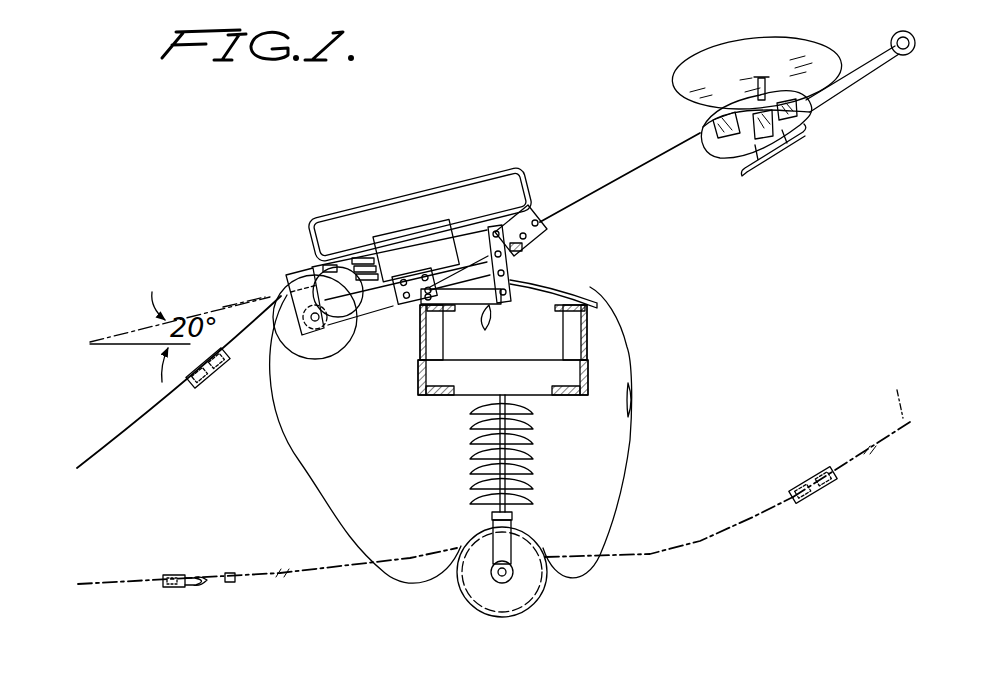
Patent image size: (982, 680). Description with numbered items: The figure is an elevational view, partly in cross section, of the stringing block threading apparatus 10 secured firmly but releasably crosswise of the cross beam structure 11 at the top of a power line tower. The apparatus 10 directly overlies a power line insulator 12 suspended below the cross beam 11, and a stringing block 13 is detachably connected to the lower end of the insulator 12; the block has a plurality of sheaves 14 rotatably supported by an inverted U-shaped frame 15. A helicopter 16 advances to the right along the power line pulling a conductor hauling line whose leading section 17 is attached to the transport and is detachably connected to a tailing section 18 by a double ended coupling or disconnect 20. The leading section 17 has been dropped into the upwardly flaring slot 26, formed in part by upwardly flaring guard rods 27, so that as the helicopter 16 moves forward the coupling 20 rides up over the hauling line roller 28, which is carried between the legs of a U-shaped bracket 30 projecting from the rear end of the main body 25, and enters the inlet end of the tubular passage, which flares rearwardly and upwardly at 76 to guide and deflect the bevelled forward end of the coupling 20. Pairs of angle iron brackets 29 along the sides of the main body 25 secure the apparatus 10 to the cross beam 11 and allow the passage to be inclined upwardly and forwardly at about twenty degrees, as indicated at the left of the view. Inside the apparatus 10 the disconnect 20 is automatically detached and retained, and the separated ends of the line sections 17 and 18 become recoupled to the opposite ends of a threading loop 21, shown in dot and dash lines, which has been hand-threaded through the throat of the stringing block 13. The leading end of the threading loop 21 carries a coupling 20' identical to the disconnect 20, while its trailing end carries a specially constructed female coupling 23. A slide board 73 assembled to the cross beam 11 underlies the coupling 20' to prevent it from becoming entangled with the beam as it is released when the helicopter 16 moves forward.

The stringing block threading apparatus 10 is at (482, 153).
The cross beam structure 11 is at (419, 401).
The power line insulator 12 is at (468, 463).
The stringing block 13 is at (488, 519).
The sheaves 14 is at (470, 600).
The inverted U-shaped frame 15 is at (505, 545).
The helicopter 16 is at (732, 168).
The leading section of hauling line 17 is at (637, 170).
The tailing section of hauling line 18 is at (133, 432).
The double ended coupling (disconnect) 20 is at (218, 394).
The coupling 20' is at (708, 402).
The threading loop 21 is at (630, 352).
The female coupling 23 is at (183, 587).
The main body 25 is at (418, 262).
The upwardly flaring slot 26 is at (473, 232).
The guard rods 27 is at (375, 200).
The hauling line roller 28 is at (320, 352).
The angle iron brackets 29 is at (480, 329).
The U-shaped bracket 30 is at (340, 322).
The slide board 73 is at (534, 292).
The flared inlet end 76 is at (285, 278).